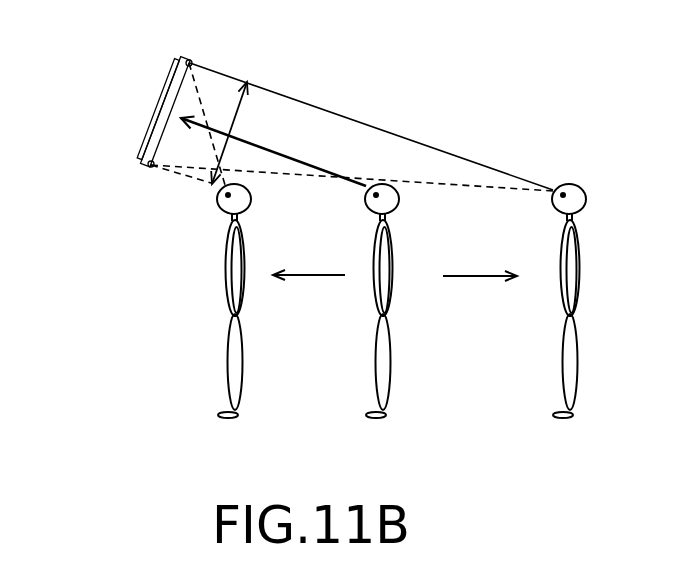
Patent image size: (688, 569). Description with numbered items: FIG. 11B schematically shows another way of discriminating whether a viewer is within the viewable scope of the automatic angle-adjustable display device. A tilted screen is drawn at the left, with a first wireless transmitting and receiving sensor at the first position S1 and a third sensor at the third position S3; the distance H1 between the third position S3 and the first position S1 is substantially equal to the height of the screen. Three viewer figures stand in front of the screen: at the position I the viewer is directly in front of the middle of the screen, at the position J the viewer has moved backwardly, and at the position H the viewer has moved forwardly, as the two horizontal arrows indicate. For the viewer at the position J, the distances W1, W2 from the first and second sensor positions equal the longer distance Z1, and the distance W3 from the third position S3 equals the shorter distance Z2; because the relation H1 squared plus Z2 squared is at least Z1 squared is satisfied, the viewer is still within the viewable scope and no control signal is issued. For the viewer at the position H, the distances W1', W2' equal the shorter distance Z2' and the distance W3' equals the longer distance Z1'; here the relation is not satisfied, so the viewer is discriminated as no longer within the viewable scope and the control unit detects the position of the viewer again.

The first position S1 is at (135, 180).
The third position S3 is at (183, 46).
The distance between the third position and the first position H1 is at (233, 118).
The distance from the third position to the viewer at position J W3 is at (377, 126).
The shorter distance Z2 is at (377, 126).
The distance from the third position to the viewer at position H W3' is at (252, 92).
The longer distance Z1' is at (252, 92).
The distance from the first position to the viewer at position J W1 is at (352, 211).
The distance from the second position to the viewer at position J W2 is at (352, 211).
The longer distance Z1 is at (352, 211).
The distance from the first position to the viewer at position H W1' is at (120, 209).
The distance from the second position to the viewer at position H W2' is at (120, 209).
The shorter distance Z2' is at (120, 209).
The position H is at (234, 320).
The position I is at (382, 320).
The position J is at (569, 320).